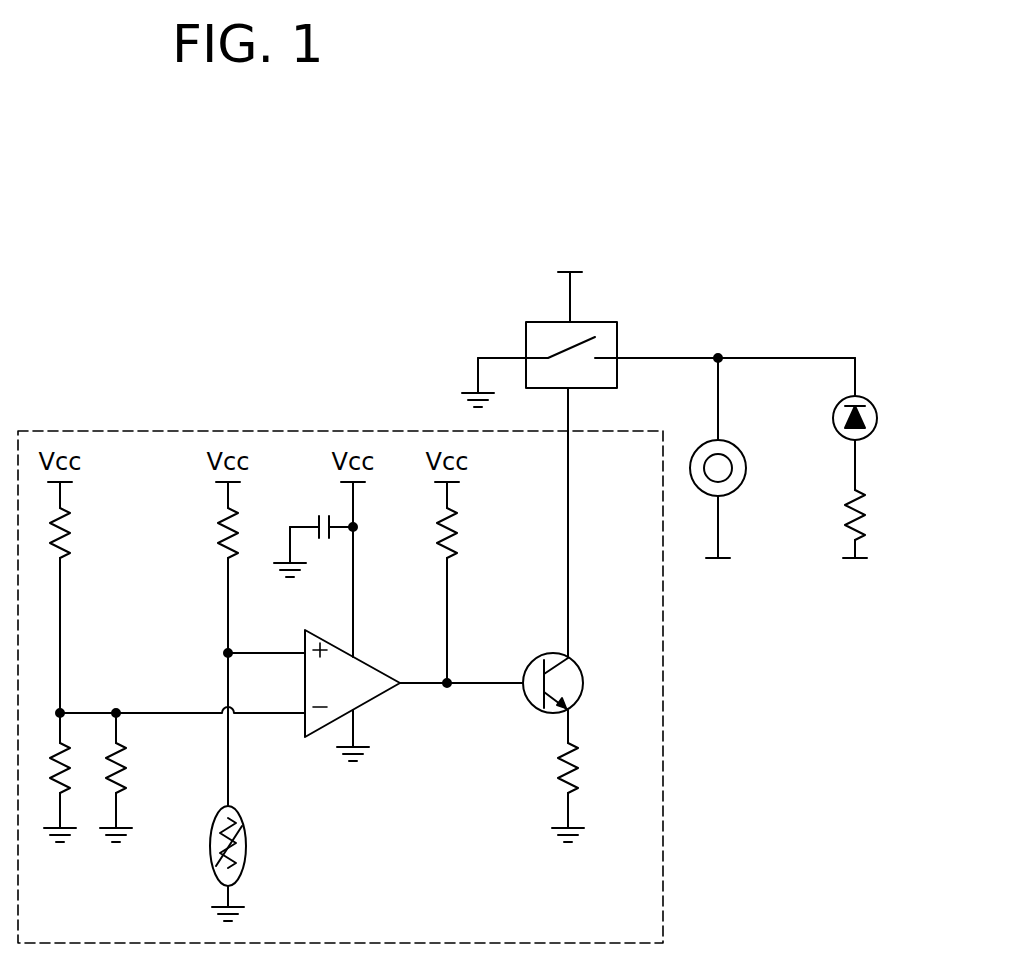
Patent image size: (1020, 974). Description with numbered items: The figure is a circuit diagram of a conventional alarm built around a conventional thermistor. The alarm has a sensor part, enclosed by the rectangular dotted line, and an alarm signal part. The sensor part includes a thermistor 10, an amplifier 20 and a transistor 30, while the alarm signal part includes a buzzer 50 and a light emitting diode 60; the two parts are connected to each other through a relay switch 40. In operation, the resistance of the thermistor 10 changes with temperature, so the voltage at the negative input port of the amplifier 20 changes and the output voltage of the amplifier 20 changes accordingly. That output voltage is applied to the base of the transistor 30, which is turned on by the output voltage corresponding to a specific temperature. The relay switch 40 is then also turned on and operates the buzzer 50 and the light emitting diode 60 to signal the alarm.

The thermistor 10 is at (246, 845).
The amplifier 20 is at (380, 697).
The transistor 30 is at (583, 683).
The relay switch 40 is at (617, 322).
The buzzer 50 is at (737, 446).
The light emitting diode 60 is at (872, 402).